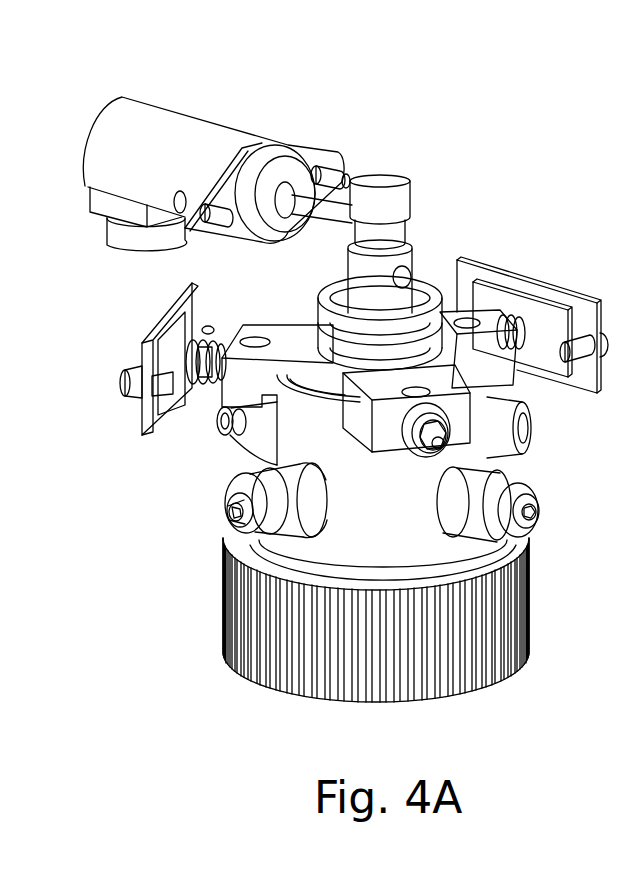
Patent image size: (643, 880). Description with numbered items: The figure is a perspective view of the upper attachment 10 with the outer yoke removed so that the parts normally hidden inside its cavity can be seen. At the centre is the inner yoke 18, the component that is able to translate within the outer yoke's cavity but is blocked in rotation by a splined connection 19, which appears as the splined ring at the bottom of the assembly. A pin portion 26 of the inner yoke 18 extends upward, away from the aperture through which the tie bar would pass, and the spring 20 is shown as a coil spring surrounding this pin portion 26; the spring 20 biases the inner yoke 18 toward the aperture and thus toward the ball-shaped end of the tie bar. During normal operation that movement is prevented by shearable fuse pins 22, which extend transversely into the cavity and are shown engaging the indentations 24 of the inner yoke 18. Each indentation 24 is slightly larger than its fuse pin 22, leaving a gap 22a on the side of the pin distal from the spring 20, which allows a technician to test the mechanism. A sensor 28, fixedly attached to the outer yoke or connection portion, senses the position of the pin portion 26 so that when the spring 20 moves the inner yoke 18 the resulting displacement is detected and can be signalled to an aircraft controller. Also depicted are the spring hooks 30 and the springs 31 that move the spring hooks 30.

The upper attachment 10 is at (516, 93).
The inner yoke 18 is at (443, 536).
The splined connection 19 is at (530, 645).
The spring 20 is at (434, 296).
The fuse pins 22 is at (226, 516).
The gap 22a is at (312, 520).
The indentations 24 is at (327, 492).
The pin portion 26 is at (398, 208).
The sensor 28 is at (152, 110).
The spring hooks 30 is at (503, 322).
The springs 31 is at (212, 386).